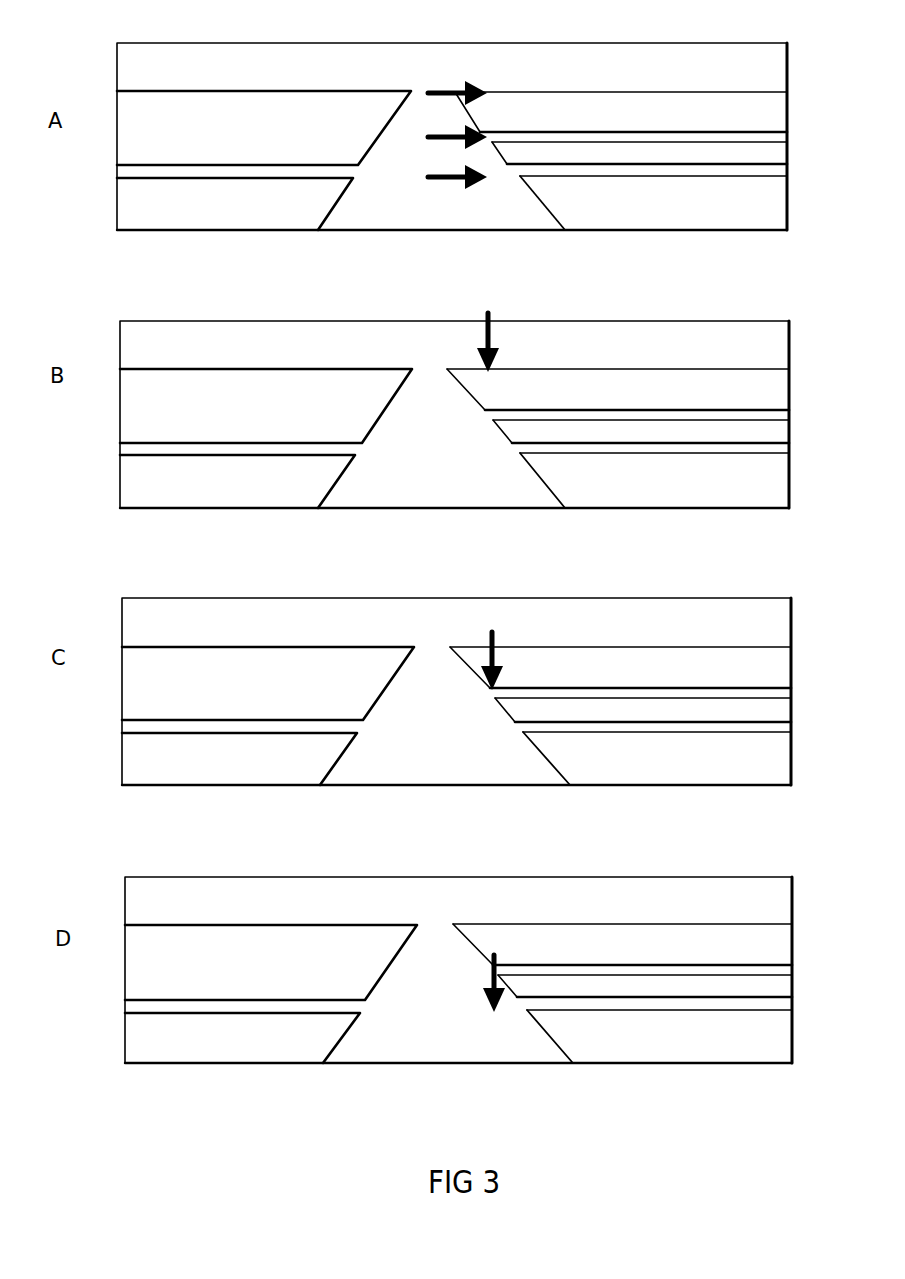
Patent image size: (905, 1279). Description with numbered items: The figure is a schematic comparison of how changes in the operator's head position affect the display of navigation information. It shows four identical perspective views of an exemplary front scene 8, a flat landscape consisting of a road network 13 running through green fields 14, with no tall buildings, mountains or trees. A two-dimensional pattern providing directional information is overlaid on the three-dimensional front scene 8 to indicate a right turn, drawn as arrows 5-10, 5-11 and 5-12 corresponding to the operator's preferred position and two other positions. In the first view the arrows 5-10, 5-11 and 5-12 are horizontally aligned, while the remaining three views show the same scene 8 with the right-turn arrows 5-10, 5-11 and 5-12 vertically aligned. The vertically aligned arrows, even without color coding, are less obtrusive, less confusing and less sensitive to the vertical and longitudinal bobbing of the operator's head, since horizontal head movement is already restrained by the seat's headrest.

The front scene 8 is at (162, 74).
The road network 13 is at (267, 577).
The green fields 14 is at (609, 577).
The arrow 5-10 is at (430, 137).
The arrow 5-11 is at (430, 178).
The arrow 5-12 is at (428, 93).